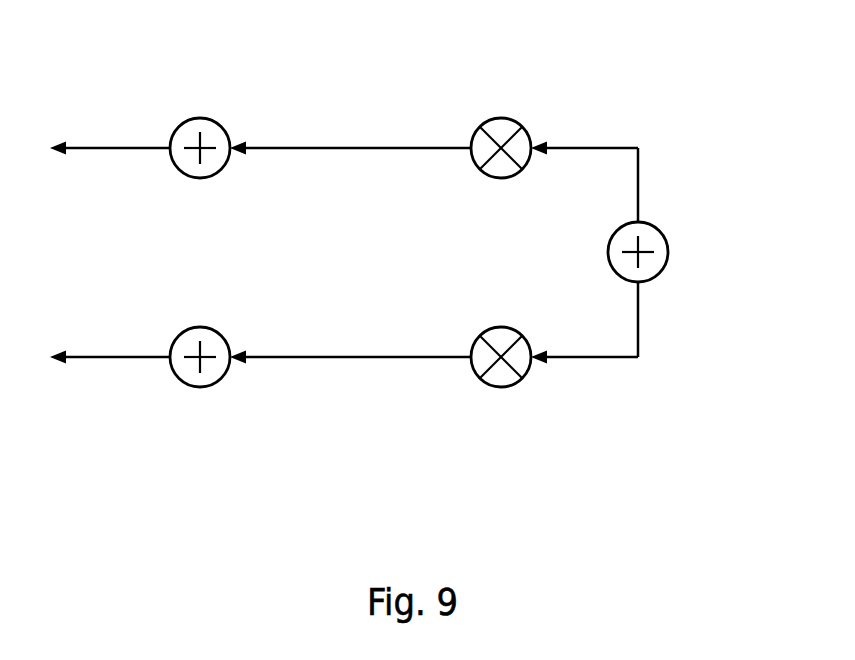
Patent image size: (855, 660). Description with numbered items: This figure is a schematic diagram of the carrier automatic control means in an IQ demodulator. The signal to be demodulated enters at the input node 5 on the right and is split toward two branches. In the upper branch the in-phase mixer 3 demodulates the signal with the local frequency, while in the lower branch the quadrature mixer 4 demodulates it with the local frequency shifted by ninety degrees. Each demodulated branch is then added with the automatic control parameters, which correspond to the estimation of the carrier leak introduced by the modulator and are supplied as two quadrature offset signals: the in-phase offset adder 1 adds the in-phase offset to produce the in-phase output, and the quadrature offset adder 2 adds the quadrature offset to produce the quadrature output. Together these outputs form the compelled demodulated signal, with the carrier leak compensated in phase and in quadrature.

The I-channel offset adder (offset_id) 1 is at (200, 104).
The Q-channel offset adder (offset_qd) 2 is at (200, 401).
The I-channel mixer (LO) 3 is at (501, 192).
The Q-channel mixer (LO + 90°) 4 is at (501, 401).
The input summing node 5 is at (682, 252).